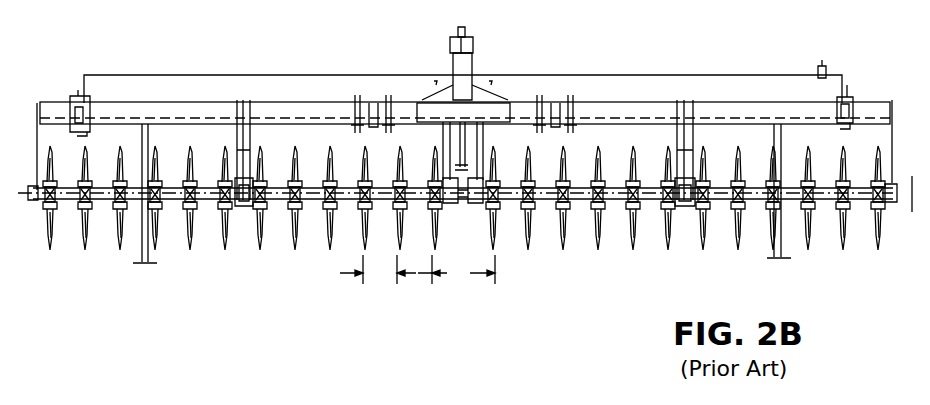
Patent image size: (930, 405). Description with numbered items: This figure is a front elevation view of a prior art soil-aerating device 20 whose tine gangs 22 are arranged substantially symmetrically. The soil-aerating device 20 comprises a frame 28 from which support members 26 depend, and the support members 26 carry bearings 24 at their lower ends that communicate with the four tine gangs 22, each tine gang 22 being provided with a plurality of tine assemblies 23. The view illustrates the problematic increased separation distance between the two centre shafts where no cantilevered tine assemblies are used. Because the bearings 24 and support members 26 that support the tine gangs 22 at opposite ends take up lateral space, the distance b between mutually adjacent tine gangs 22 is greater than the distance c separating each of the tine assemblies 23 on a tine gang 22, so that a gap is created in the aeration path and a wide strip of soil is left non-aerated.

The soil-aerating device 20 is at (465, 193).
The tine gang 22 is at (620, 204).
The tine assembly 23 is at (86, 240).
The bearing 24 is at (245, 208).
The support member 26 is at (700, 128).
The frame 28 is at (203, 117).